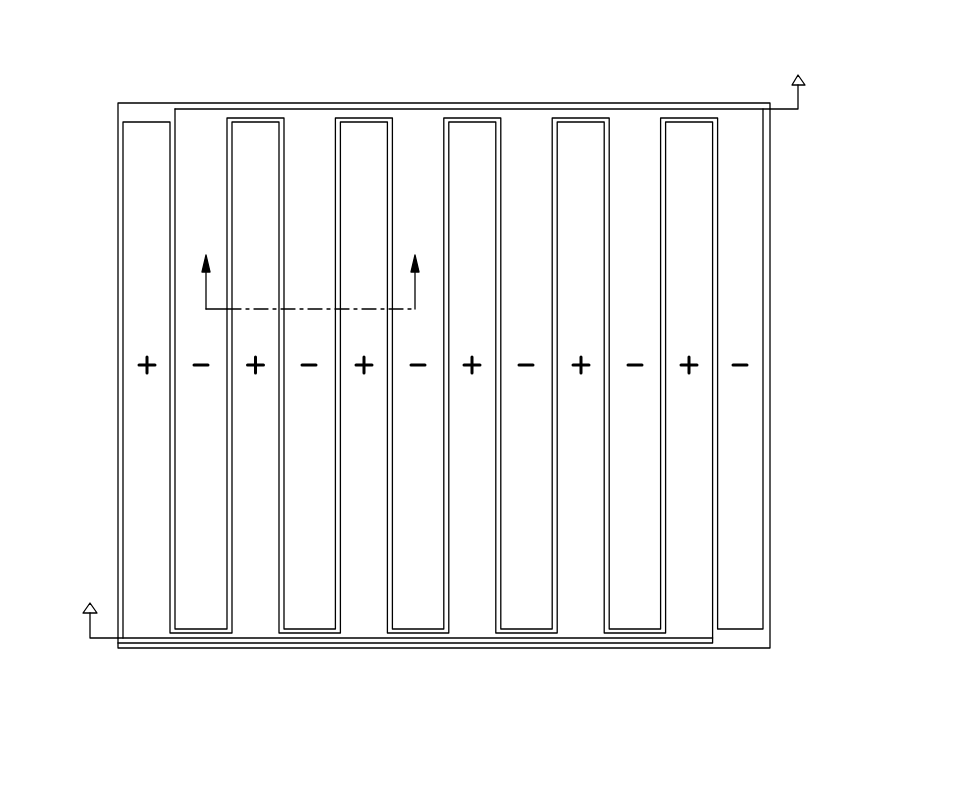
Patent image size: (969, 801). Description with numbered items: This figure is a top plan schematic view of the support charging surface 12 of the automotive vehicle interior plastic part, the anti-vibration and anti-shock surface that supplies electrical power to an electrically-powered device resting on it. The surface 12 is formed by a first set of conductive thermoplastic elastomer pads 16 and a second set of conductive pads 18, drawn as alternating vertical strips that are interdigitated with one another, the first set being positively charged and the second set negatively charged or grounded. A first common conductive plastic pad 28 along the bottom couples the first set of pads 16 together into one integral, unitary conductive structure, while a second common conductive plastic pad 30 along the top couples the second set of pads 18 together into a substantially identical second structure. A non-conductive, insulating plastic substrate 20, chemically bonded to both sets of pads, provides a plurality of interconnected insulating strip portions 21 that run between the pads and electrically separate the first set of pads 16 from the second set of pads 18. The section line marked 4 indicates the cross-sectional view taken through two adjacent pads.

The support surface 12 is at (644, 106).
The plastic substrate 20 is at (150, 109).
The second common conductive plastic pad 30 is at (473, 112).
The first common conductive plastic pad 28 is at (418, 637).
The first set of conductive pads 16 is at (368, 142).
The second set of conductive pads 18 is at (395, 622).
The strip portions 21 is at (516, 106).
The section line 4- 4 is at (304, 300).